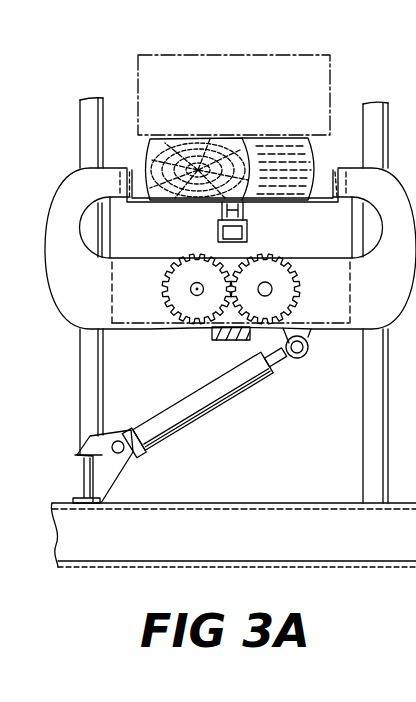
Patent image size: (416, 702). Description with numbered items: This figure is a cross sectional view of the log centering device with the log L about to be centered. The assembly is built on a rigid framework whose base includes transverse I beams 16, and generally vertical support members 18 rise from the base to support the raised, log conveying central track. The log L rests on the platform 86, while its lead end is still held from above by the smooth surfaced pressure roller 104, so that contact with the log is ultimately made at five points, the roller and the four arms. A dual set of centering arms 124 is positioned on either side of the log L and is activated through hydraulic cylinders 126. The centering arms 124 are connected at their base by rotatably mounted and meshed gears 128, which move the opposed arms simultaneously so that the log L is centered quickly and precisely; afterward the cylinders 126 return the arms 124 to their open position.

The transverse I beam 16 is at (297, 523).
The vertical support member 18 is at (85, 380).
The platform 86 is at (180, 203).
The pressure roller 104 is at (220, 58).
The centering arm 124 is at (148, 300).
The hydraulic cylinder 126 is at (187, 408).
The gear 128 is at (275, 268).
The log L is at (208, 148).